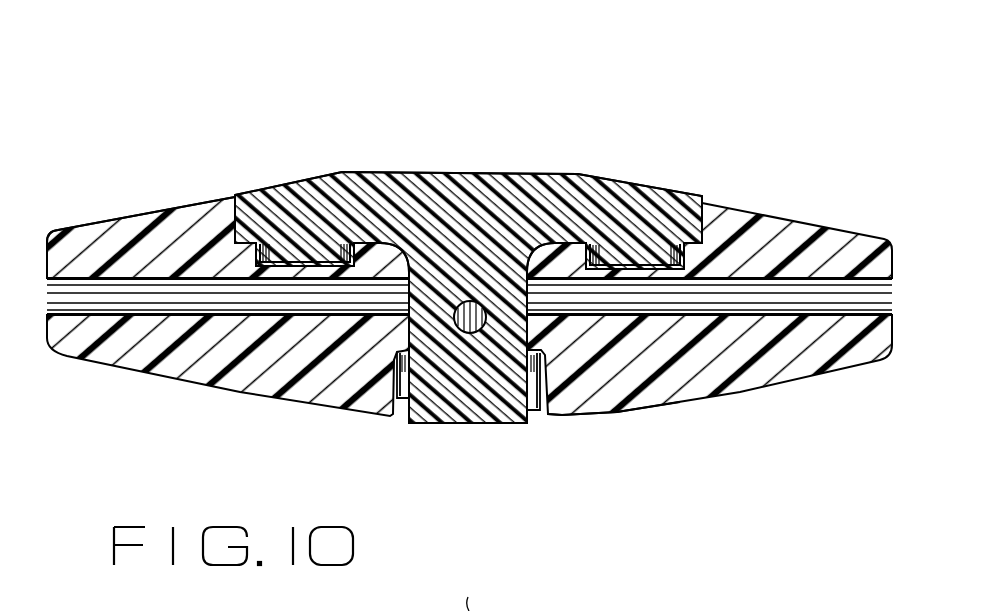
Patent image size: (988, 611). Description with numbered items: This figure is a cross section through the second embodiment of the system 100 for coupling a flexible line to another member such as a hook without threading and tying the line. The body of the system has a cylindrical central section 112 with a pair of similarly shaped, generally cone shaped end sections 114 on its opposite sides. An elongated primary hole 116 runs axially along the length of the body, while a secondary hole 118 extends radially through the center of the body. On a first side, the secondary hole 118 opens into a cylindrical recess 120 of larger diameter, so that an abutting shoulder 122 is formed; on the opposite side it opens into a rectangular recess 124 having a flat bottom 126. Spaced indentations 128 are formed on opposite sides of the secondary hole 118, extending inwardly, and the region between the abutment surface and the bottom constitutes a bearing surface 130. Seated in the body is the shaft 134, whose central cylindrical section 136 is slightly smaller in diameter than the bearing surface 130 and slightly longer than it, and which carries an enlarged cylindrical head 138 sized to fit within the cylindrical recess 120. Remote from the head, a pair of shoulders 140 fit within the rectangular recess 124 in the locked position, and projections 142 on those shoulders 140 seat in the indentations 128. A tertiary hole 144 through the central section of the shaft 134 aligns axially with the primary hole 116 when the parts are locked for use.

The system 100 is at (728, 96).
The cylindrical central section 112 is at (615, 416).
The cone shaped end sections 114 is at (236, 392).
The primary hole 116 is at (893, 297).
The secondary hole 118 is at (558, 418).
The cylindrical recess 120 is at (420, 424).
The abutting shoulder 122 is at (393, 414).
The rectangular recess 124 is at (245, 196).
The flat bottom 126 is at (270, 215).
The spaced indentations 128 is at (355, 243).
The bearing surface 130 is at (430, 300).
The shaft 134 is at (578, 174).
The central cylindrical section 136 is at (450, 280).
The enlarged cylindrical head 138 is at (518, 424).
The shoulders 140 is at (360, 225).
The projections 142 is at (310, 245).
The tertiary hole 144 is at (458, 424).